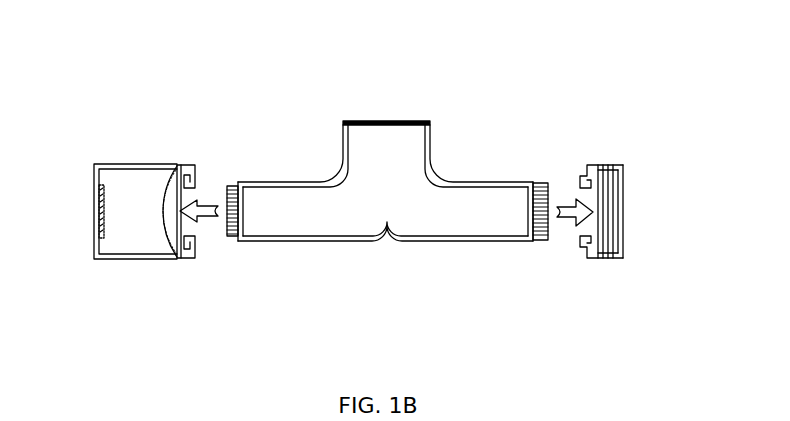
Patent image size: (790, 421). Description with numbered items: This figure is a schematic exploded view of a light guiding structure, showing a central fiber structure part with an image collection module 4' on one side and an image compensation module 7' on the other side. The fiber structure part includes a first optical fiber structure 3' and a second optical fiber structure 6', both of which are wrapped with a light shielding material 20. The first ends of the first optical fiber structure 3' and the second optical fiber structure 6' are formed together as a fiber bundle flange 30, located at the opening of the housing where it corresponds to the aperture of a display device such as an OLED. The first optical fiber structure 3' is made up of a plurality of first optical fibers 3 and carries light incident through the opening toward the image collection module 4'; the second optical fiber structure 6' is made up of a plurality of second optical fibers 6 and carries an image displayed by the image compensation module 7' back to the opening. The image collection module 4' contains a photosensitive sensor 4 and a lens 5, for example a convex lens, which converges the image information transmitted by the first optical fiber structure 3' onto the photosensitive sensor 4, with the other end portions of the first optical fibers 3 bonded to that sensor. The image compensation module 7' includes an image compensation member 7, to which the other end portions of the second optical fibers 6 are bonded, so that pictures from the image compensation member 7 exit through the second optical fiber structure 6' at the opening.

The first optical fibers 3 is at (228, 254).
The first optical fiber structure 3' is at (293, 221).
The photosensitive sensor 4 is at (144, 176).
The image collection module 4' is at (117, 251).
The lens 5 is at (165, 180).
The second optical fibers 6 is at (552, 250).
The second optical fiber structure 6' is at (479, 222).
The image compensation member 7 is at (608, 175).
The image compensation module 7' is at (623, 243).
The light shielding material 20 is at (385, 189).
The fiber bundle flange 30 is at (425, 120).